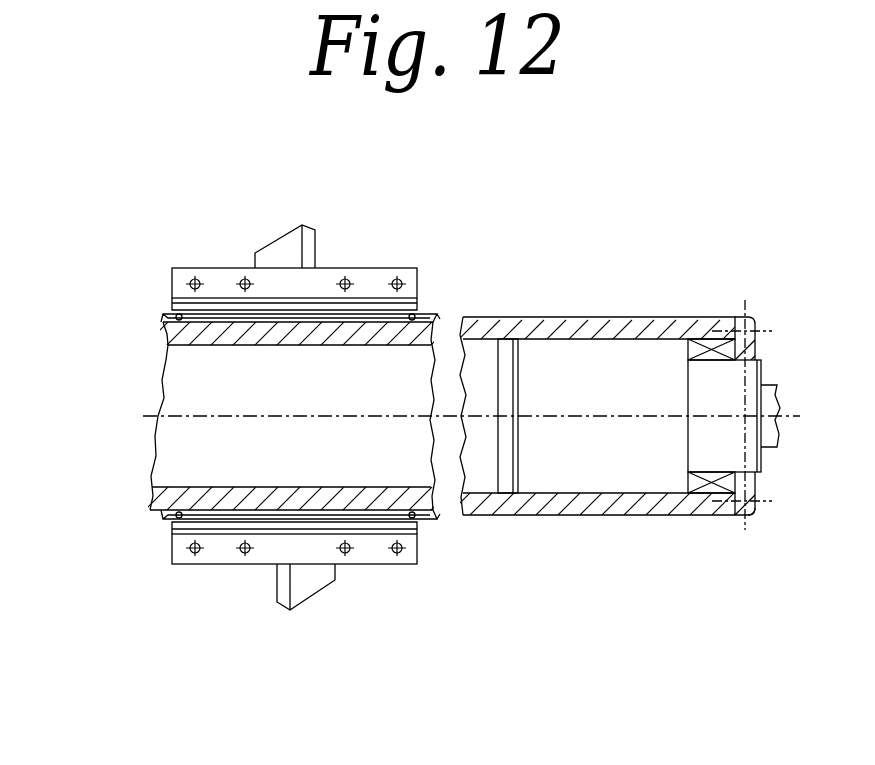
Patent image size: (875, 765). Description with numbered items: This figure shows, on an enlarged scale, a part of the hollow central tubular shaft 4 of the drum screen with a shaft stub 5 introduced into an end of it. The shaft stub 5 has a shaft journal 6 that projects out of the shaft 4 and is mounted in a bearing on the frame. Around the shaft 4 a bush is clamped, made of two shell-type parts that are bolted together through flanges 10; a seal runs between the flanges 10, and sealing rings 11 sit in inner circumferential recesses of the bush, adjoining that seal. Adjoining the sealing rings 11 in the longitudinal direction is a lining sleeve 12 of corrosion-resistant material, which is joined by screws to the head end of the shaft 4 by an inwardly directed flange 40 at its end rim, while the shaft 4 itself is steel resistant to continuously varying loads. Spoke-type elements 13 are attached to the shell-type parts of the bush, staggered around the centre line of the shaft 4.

The central tubular shaft 4 is at (610, 330).
The shaft stub 5 is at (747, 318).
The shaft journal 6 is at (773, 393).
The flange 10 is at (214, 280).
The sealing ring 11 is at (435, 318).
The lining sleeve 12 is at (673, 316).
The spoke-type element 13 is at (280, 253).
The inwardly directed flange 40 is at (750, 506).